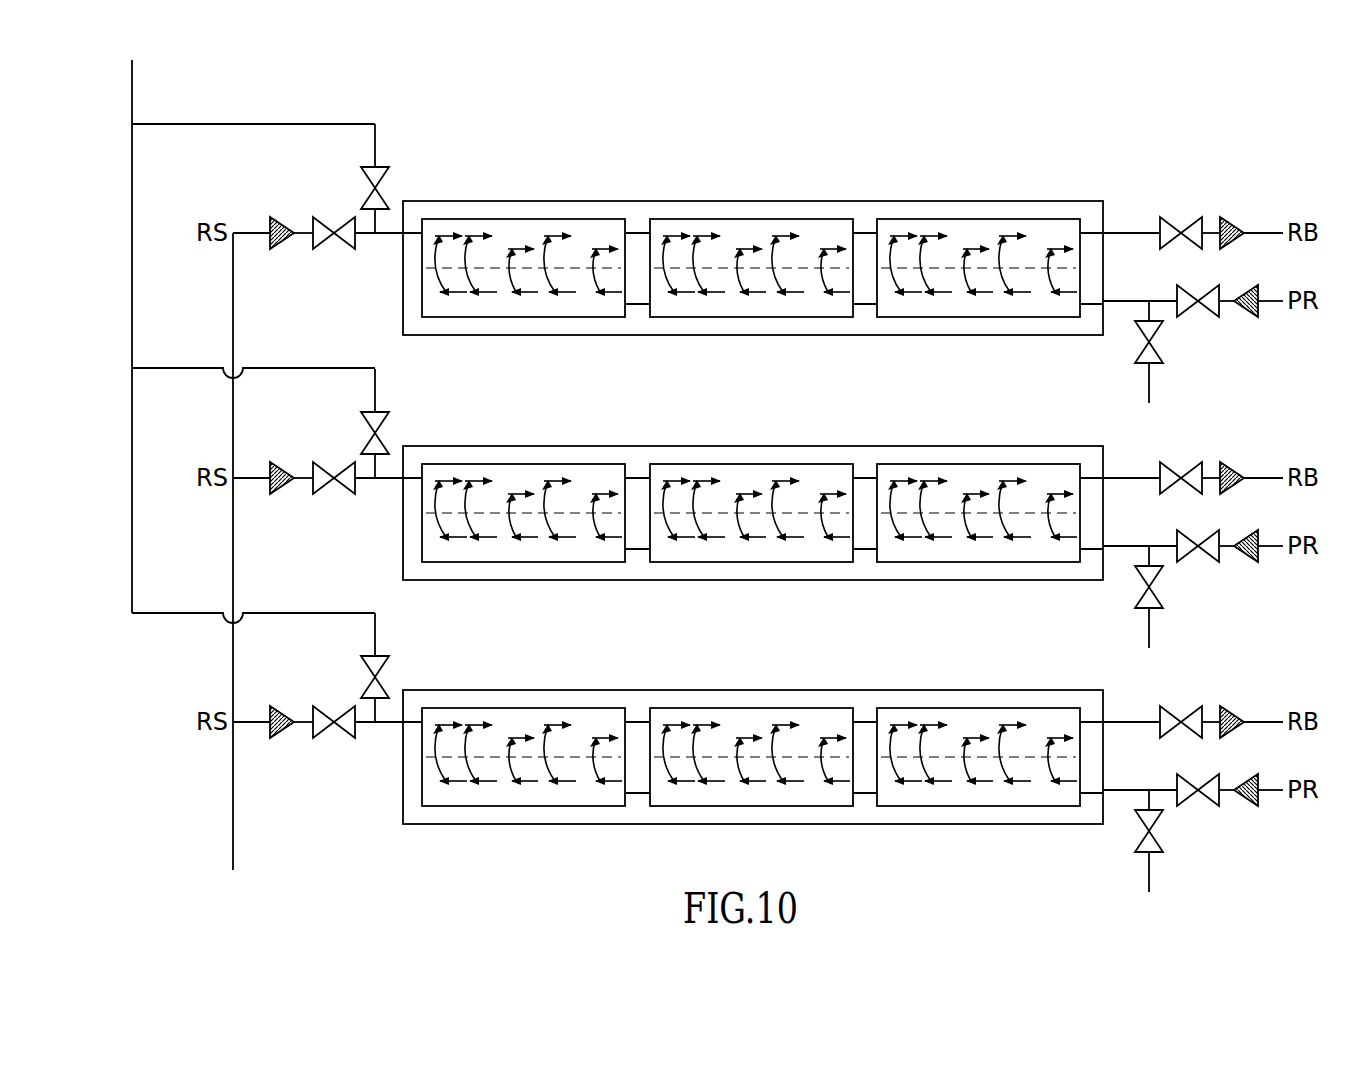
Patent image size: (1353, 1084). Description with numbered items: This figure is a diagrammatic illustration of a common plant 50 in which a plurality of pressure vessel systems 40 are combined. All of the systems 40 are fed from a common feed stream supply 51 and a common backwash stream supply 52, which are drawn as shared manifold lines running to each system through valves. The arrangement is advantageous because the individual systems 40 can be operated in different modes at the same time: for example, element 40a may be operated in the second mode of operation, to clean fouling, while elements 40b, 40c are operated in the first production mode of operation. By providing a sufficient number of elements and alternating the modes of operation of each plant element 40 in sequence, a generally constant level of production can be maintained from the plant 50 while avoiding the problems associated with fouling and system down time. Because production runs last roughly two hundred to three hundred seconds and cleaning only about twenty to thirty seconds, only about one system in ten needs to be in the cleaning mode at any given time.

The common plant 50 is at (1067, 141).
The common feed stream supply 51 is at (232, 818).
The backwash stream supply 52 is at (132, 88).
The system 40 is at (988, 201).
The element 40a is at (548, 201).
The element 40b is at (548, 446).
The element 40c is at (548, 690).